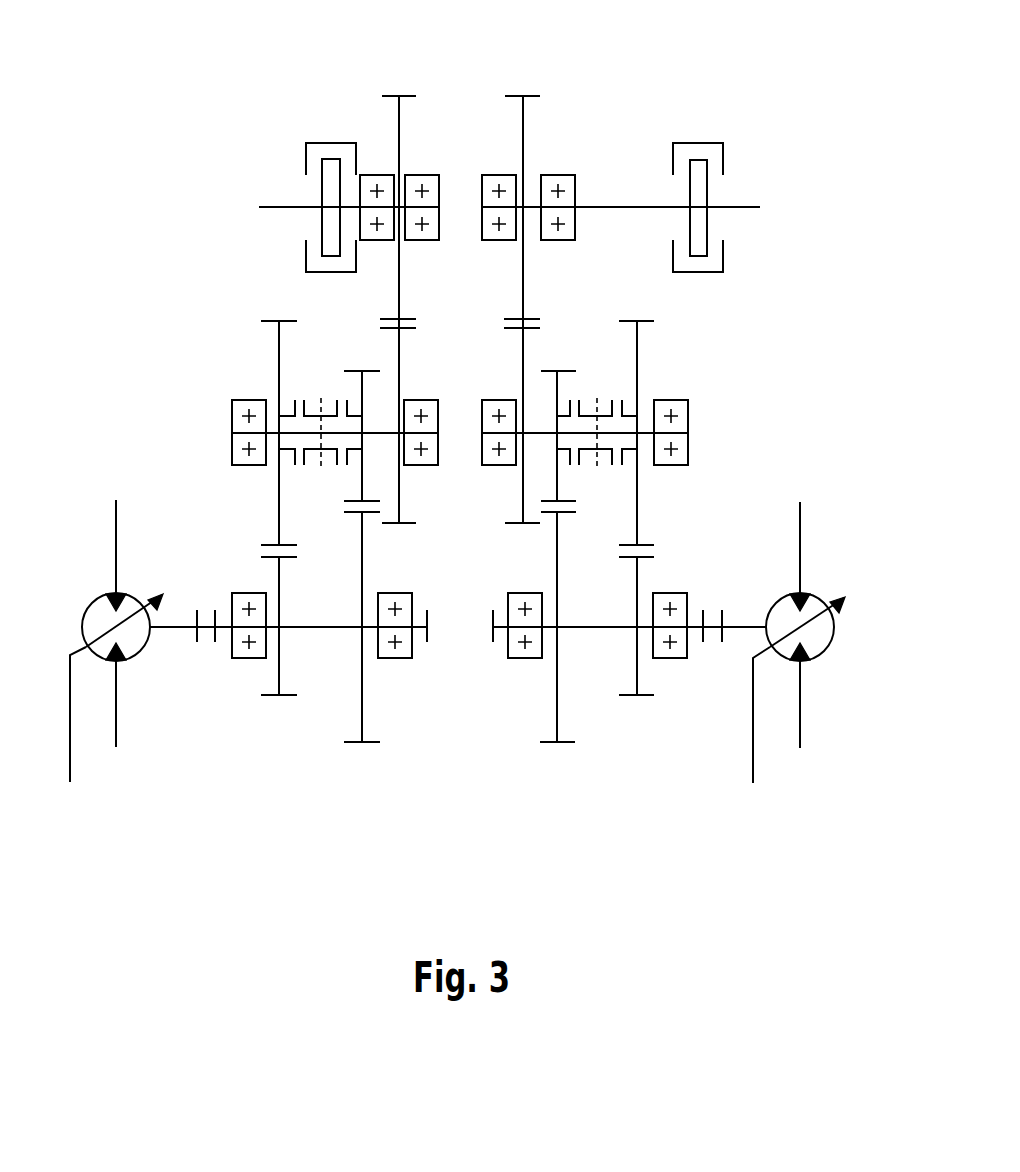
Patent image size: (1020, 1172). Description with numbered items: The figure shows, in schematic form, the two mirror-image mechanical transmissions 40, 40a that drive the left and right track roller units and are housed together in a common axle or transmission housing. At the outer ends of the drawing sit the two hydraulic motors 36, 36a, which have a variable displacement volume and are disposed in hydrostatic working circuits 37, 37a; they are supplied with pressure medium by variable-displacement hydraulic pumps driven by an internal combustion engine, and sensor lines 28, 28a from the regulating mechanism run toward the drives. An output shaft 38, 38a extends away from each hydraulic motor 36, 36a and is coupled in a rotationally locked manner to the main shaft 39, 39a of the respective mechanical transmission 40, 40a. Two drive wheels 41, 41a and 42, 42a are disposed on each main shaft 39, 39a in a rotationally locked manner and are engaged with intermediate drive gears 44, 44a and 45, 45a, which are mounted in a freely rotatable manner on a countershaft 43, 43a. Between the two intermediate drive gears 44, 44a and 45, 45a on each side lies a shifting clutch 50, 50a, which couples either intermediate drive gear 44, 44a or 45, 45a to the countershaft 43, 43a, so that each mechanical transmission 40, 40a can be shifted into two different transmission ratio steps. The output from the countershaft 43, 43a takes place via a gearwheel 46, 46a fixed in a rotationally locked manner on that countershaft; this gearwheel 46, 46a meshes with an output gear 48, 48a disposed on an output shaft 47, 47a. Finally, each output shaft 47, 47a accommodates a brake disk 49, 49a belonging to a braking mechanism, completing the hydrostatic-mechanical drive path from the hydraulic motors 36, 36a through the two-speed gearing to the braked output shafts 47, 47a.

The sensor line 28 is at (71, 763).
The sensor line 28a is at (752, 762).
The hydraulic motor 36 is at (130, 605).
The hydraulic motor 36a is at (816, 643).
The hydrostatic working circuit 37 is at (115, 522).
The hydrostatic working circuit 37a is at (801, 528).
The output shaft 38 is at (170, 628).
The output shaft 38a is at (745, 626).
The main shaft 39 is at (325, 628).
The main shaft 39a is at (592, 628).
The mechanical transmission 40 is at (396, 136).
The mechanical transmission 40a is at (526, 136).
The drive wheel 41 is at (278, 675).
The drive wheel 41a is at (638, 673).
The drive wheel 42 is at (363, 704).
The drive wheel 42a is at (556, 683).
The countershaft 43 is at (309, 432).
The countershaft 43a is at (638, 432).
The intermediate drive gear 44 is at (278, 368).
The intermediate drive gear 44a is at (638, 520).
The intermediate drive gear 45 is at (361, 468).
The intermediate drive gear 45a is at (558, 394).
The gearwheel 46 is at (400, 363).
The gearwheel 46a is at (521, 373).
The output shaft 47 is at (270, 207).
The output shaft 47a is at (620, 207).
The output gear 48 is at (397, 287).
The output gear 48a is at (524, 255).
The brake disk 49 is at (328, 222).
The brake disk 49a is at (698, 195).
The shifting clutch 50 is at (320, 452).
The shifting clutch 50a is at (598, 412).